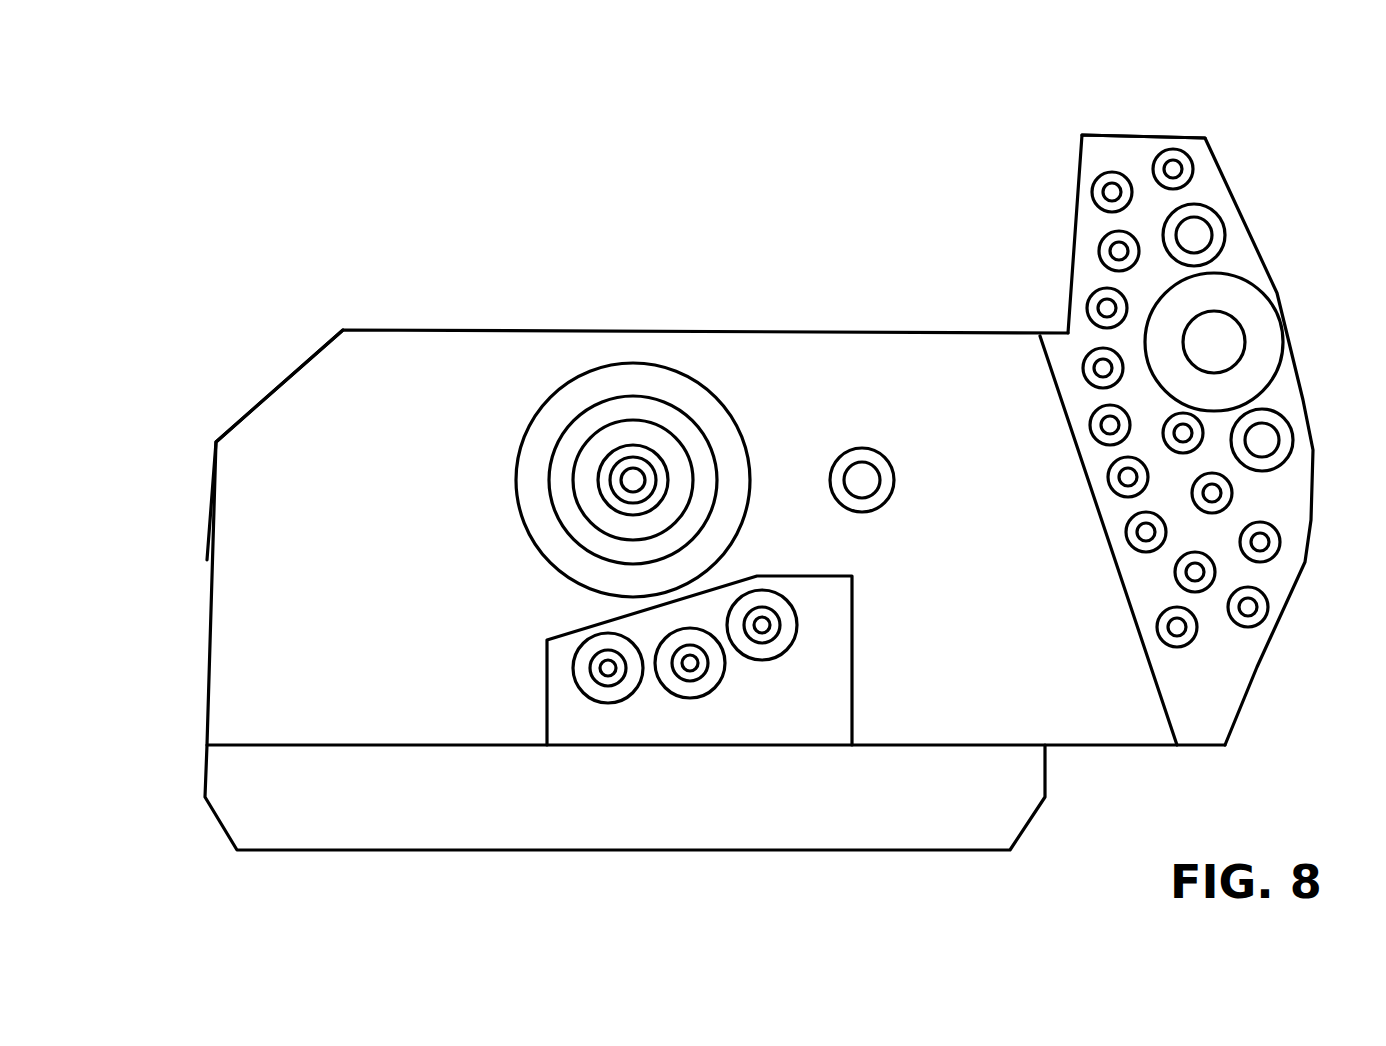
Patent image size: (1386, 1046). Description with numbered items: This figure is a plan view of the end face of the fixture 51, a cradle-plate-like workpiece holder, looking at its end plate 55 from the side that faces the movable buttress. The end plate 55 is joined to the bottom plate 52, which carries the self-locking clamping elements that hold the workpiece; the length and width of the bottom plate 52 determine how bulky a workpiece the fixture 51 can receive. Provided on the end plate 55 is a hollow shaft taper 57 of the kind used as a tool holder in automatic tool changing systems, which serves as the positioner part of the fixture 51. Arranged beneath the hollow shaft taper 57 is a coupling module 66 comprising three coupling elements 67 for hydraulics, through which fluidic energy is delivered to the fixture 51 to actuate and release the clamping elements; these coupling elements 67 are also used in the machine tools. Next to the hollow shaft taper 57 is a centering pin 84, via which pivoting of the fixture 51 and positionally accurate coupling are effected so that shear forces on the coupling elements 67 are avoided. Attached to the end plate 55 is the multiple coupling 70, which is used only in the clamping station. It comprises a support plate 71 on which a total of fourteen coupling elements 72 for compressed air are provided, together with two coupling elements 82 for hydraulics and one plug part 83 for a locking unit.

The fixture 51 is at (430, 303).
The bottom plate 52 is at (358, 812).
The end plate 55 is at (338, 399).
The hollow shaft taper 57 is at (622, 387).
The coupling module 66 is at (817, 713).
The coupling elements 67 is at (595, 693).
The multiple coupling 70 is at (1243, 145).
The support plate 71 is at (1120, 147).
The coupling elements 72 is at (1088, 298).
The coupling elements 82 is at (1198, 232).
The plug part 83 is at (1228, 335).
The centering pin 84 is at (863, 450).